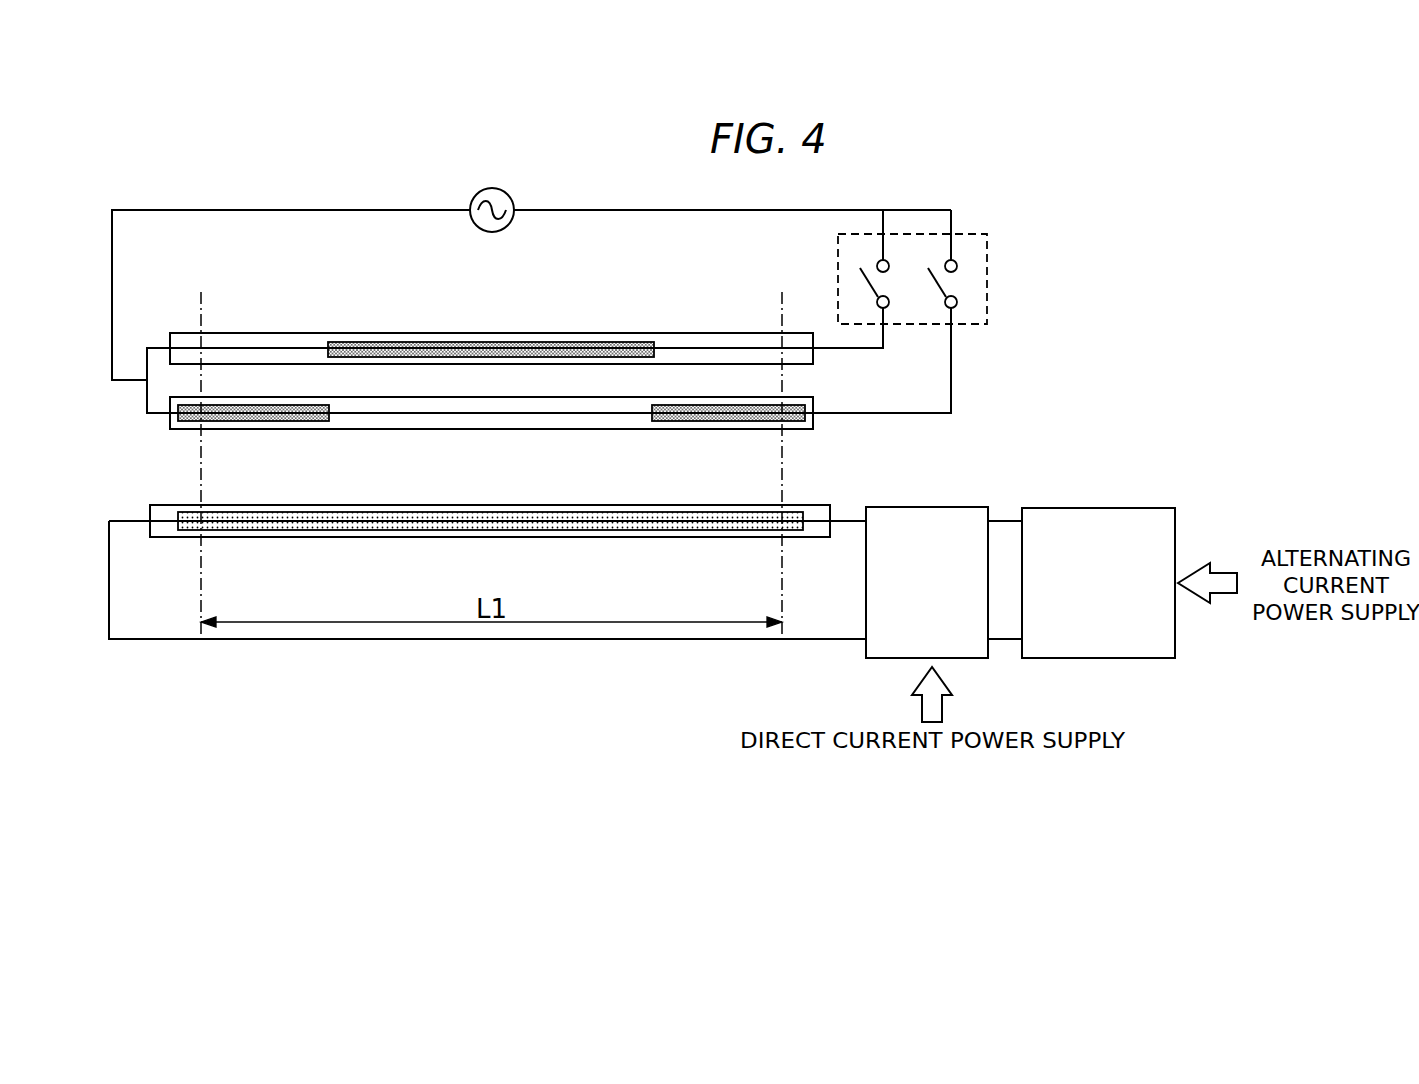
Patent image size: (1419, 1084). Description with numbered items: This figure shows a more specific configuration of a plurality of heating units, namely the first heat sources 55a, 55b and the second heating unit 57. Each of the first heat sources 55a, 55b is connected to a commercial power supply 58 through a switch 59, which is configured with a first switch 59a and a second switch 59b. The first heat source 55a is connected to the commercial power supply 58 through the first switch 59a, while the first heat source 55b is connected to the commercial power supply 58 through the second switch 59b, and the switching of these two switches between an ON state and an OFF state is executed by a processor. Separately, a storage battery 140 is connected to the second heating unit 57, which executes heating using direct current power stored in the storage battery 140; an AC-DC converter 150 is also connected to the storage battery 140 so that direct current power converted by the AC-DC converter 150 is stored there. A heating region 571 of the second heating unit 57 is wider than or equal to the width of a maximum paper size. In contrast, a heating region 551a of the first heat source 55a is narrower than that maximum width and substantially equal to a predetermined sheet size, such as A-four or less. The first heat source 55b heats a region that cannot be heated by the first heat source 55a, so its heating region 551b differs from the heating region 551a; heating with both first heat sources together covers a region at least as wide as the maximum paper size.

The commercial power supply 58 is at (503, 191).
The switch 59 is at (987, 262).
The first switch 59a is at (863, 287).
The second switch 59b is at (937, 285).
The first heat source 55a is at (491, 319).
The heating region 551a is at (385, 342).
The first heat source 55b is at (491, 442).
The heating region 551b is at (258, 421).
The second heating unit 57 is at (490, 550).
The heating region 571 is at (363, 530).
The storage battery 140 is at (935, 507).
The AC-DC converter 150 is at (1090, 508).